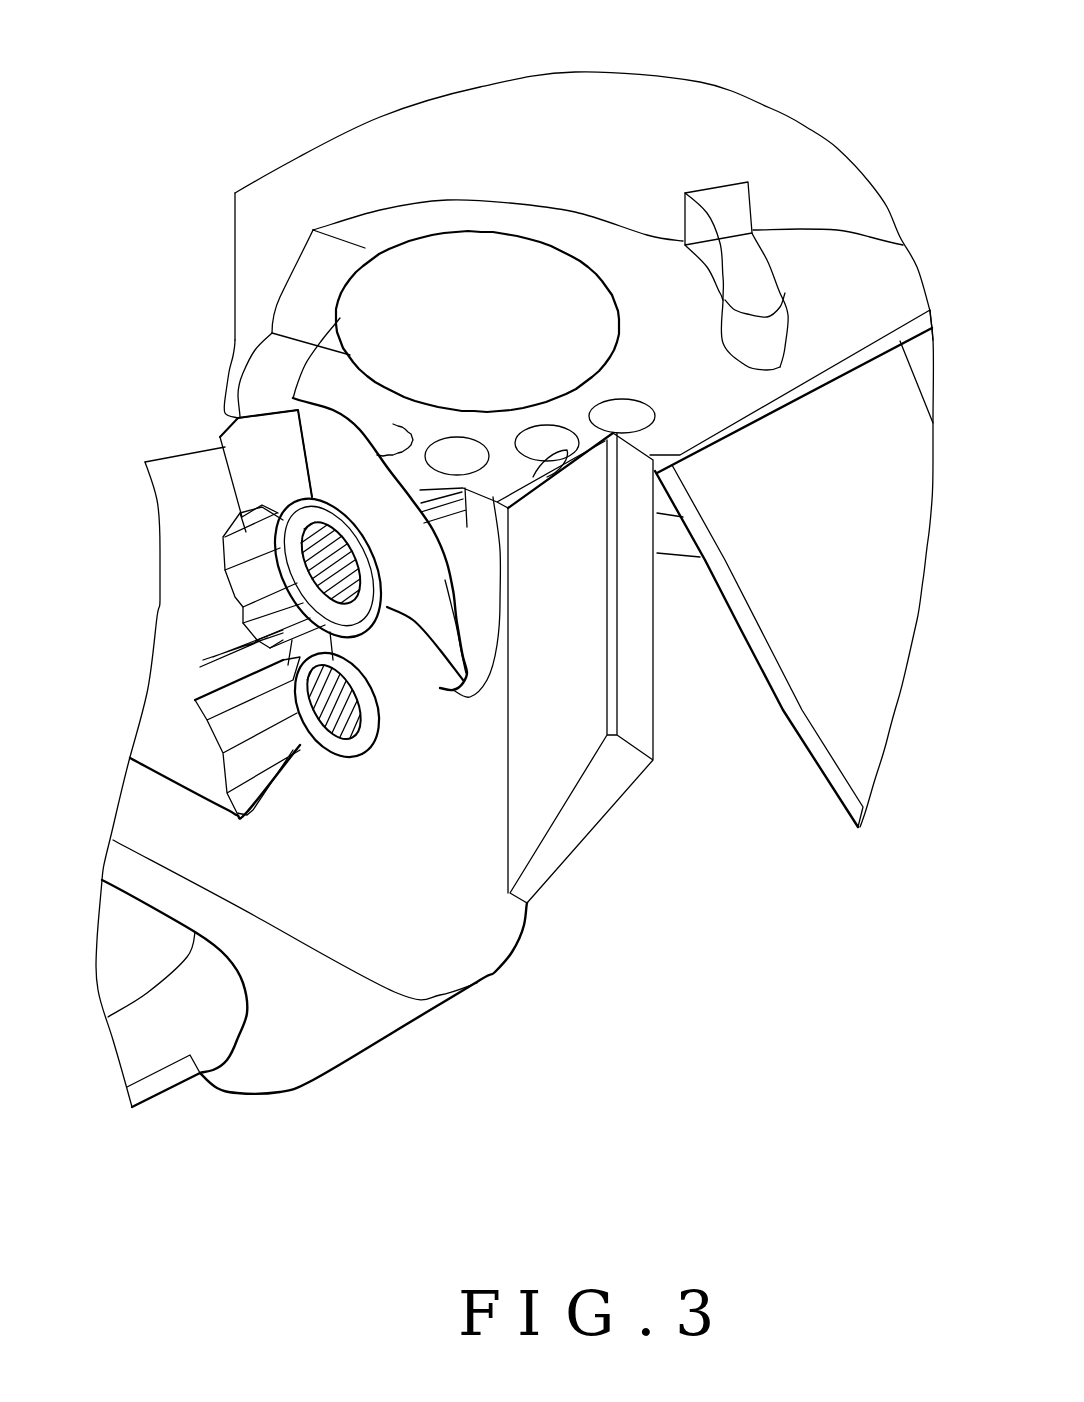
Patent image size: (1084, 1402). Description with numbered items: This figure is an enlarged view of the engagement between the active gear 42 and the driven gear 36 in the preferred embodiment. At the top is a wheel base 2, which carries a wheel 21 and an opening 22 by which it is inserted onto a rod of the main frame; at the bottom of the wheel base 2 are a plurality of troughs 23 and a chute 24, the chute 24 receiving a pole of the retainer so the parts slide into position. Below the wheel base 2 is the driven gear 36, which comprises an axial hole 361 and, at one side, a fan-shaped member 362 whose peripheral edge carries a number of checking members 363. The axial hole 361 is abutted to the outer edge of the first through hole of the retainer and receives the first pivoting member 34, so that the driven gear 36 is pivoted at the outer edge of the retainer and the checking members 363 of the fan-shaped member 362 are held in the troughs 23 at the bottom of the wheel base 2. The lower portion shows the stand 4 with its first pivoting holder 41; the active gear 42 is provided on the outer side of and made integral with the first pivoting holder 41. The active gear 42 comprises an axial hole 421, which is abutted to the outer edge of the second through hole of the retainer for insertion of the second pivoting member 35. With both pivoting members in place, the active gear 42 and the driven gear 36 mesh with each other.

The wheel base 2 is at (508, 165).
The wheel 21 is at (840, 705).
The opening 22 is at (447, 290).
The troughs 23 is at (385, 413).
The chute 24 is at (727, 213).
The first pivoting member 34 is at (302, 455).
The second pivoting member 35 is at (347, 717).
The driven gear 36 is at (253, 538).
The axial hole 361 is at (378, 606).
The fan-shaped member 362 is at (312, 467).
The checking members 363 is at (350, 396).
The stand 4 is at (135, 797).
The first pivoting holder 41 is at (185, 583).
The active gear 42 is at (250, 693).
The axial hole 421 is at (350, 733).